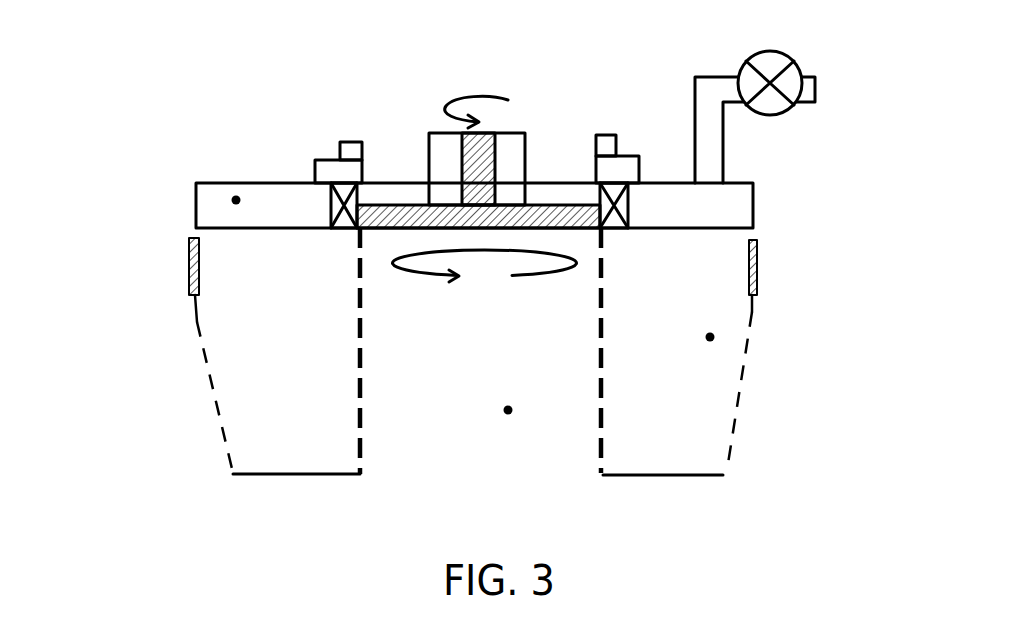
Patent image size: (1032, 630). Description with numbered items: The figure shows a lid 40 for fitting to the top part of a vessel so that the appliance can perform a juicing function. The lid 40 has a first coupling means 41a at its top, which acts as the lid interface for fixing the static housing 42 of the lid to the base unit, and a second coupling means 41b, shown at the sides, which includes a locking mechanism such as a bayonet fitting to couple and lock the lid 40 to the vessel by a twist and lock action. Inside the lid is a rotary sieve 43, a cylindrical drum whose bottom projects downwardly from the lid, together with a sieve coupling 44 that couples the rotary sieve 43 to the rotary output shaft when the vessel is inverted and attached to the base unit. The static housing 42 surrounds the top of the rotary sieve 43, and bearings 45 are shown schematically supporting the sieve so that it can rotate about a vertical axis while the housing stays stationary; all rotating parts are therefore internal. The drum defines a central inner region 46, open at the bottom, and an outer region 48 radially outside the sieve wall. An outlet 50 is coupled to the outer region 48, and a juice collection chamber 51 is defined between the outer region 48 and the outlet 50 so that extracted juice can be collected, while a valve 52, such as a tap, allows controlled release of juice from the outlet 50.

The lid 40 is at (812, 199).
The first coupling means 41a is at (315, 160).
The second coupling means 41b is at (189, 263).
The static housing 42 is at (218, 183).
The rotary sieve 43 is at (363, 315).
The sieve coupling 44 is at (429, 160).
The bearings 45 is at (331, 210).
The central inner region 46 is at (508, 410).
The outer region 48 is at (710, 337).
The outlet 50 is at (695, 109).
The juice collection chamber 51 is at (236, 200).
The valve 52 is at (795, 62).